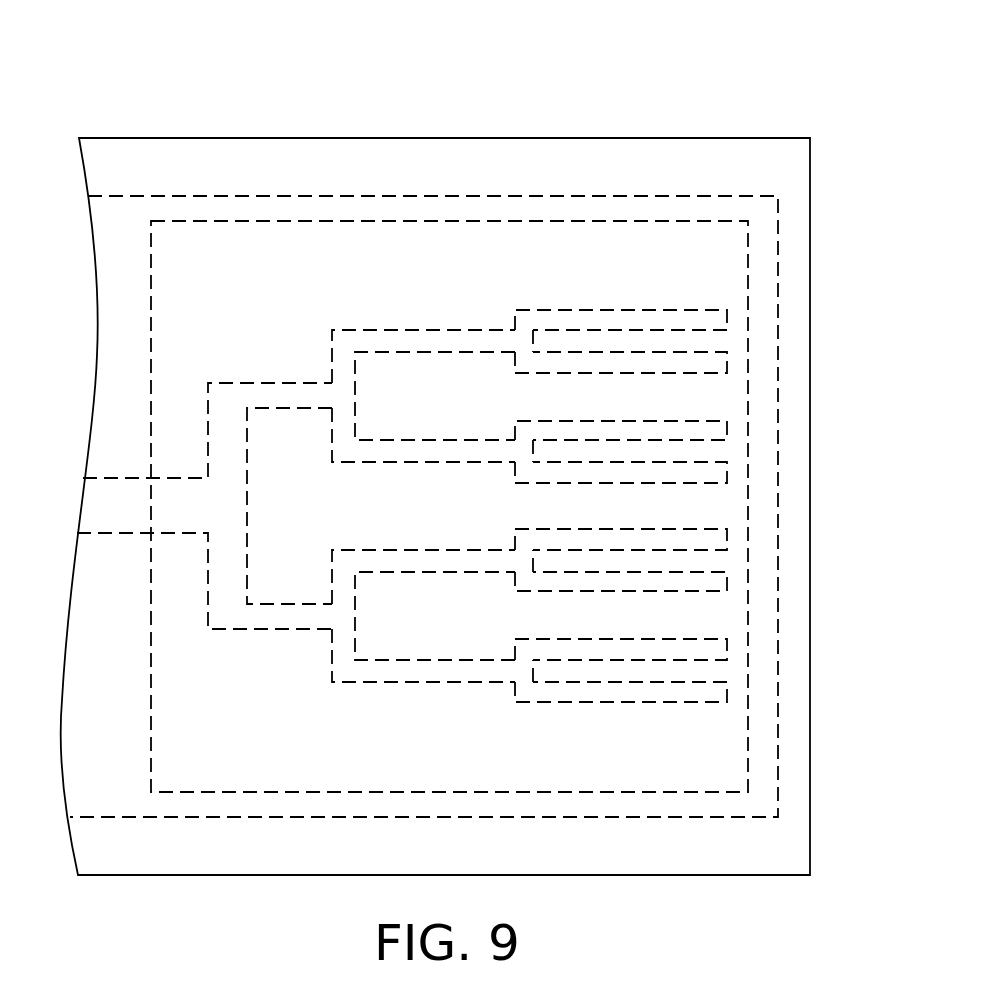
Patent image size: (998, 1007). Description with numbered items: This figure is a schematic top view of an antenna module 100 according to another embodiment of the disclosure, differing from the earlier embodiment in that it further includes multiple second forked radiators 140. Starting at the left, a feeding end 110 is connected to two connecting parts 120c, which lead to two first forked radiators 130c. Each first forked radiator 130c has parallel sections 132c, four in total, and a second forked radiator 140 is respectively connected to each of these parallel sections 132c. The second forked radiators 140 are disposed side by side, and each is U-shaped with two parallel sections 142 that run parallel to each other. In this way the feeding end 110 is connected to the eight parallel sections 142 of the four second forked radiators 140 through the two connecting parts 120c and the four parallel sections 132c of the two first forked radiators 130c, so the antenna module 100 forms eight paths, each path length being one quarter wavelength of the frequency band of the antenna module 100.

The antenna module 100 is at (946, 170).
The feeding end 110 is at (166, 505).
The connecting part 120c is at (283, 395).
The first forked radiator 130c is at (432, 360).
The parallel section 132c is at (403, 343).
The second forked radiator 140 is at (727, 508).
The parallel section 142 is at (705, 320).